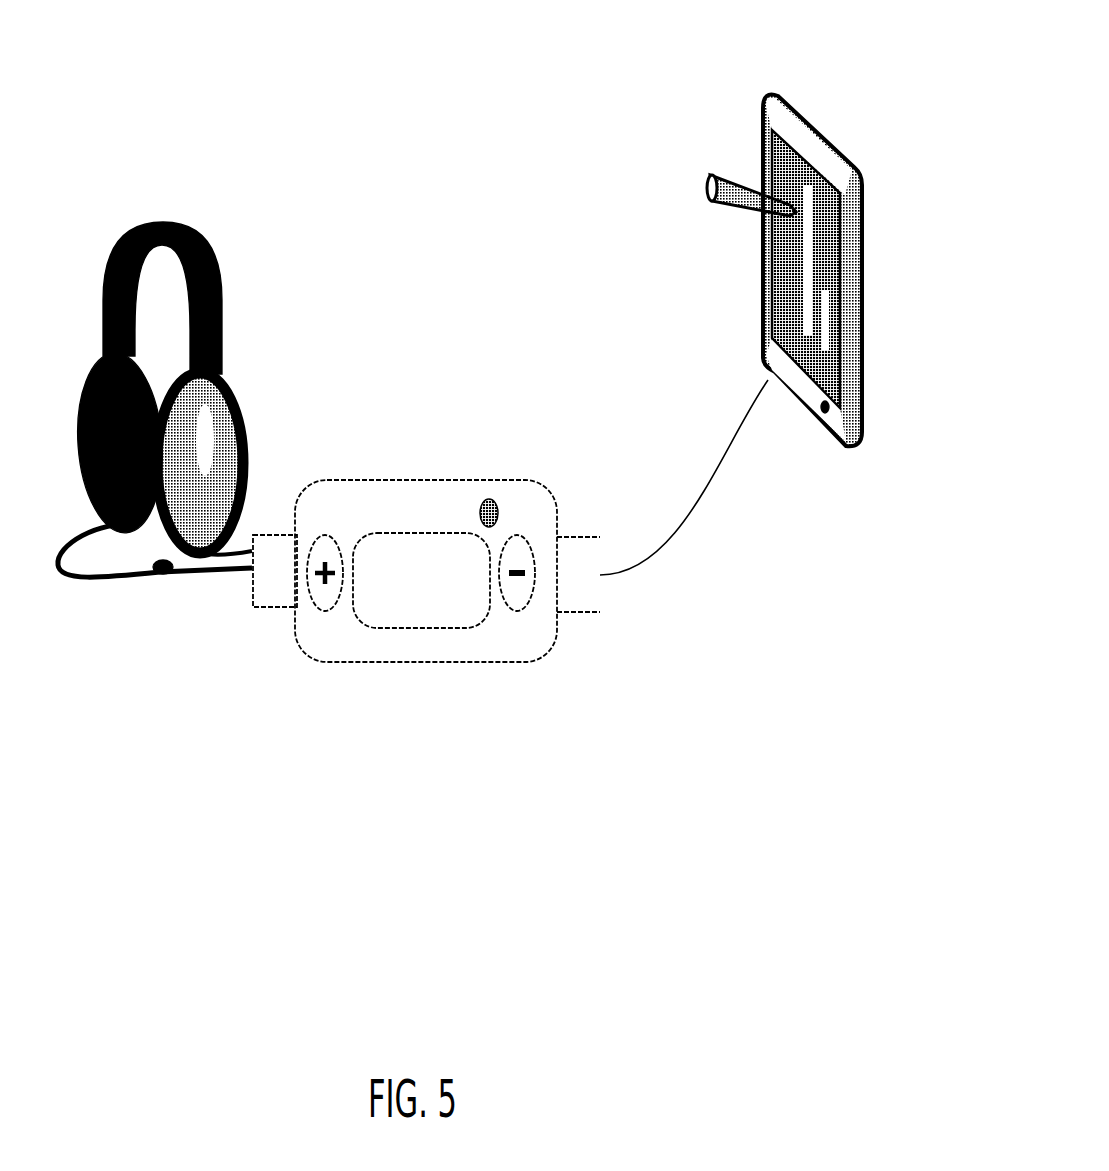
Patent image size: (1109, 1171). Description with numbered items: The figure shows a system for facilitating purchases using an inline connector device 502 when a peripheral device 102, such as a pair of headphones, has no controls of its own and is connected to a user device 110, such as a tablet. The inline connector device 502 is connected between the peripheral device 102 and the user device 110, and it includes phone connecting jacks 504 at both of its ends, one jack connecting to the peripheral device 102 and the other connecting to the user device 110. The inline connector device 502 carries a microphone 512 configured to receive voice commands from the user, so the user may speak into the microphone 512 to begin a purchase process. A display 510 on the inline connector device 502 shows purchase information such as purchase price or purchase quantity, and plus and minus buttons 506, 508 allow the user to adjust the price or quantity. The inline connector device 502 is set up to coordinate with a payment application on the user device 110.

The peripheral device 102 is at (226, 268).
The user device 110 is at (858, 118).
The inline connector device 502 is at (543, 445).
The phone connecting jacks 504 is at (272, 608).
The plus button 506 is at (325, 612).
The minus button 508 is at (517, 612).
The display 510 is at (425, 628).
The microphone 512 is at (489, 498).